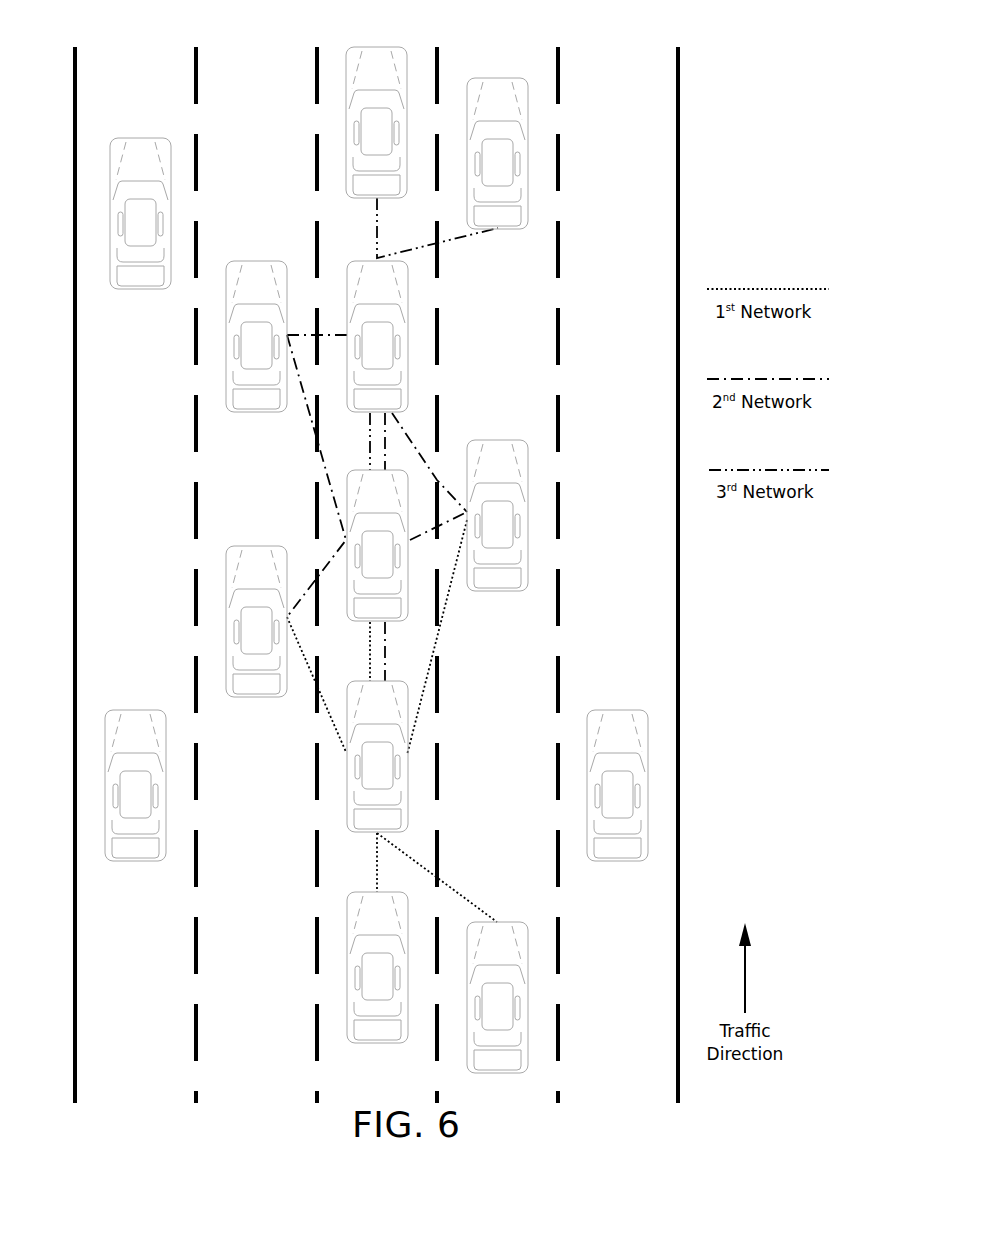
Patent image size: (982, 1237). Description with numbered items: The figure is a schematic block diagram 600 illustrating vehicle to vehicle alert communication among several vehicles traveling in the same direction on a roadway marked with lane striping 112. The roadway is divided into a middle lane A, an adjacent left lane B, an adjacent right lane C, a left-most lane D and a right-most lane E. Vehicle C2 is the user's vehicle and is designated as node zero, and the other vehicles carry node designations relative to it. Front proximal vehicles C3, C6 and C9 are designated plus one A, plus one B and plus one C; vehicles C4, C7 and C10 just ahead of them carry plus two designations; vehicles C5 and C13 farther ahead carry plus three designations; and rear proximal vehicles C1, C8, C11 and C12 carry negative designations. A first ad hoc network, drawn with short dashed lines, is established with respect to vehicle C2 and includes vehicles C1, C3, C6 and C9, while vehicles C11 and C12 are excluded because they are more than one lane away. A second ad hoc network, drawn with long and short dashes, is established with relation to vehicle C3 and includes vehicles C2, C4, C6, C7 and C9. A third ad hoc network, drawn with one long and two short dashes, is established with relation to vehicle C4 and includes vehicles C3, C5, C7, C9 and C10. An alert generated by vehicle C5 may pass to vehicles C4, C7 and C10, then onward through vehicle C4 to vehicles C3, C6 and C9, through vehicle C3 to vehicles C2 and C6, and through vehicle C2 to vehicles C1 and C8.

The schematic block diagram 600 is at (100, 29).
The lane striping 112 is at (196, 70).
The vehicle C1 is at (377, 967).
The vehicle C2 is at (377, 756).
The vehicle C3 is at (377, 545).
The vehicle C4 is at (377, 336).
The vehicle C5 is at (376, 122).
The vehicle C6 is at (256, 621).
The vehicle C7 is at (256, 336).
The vehicle C8 is at (497, 997).
The vehicle C9 is at (497, 515).
The vehicle C10 is at (497, 153).
The vehicle C11 is at (617, 785).
The vehicle C12 is at (135, 785).
The vehicle C13 is at (140, 213).